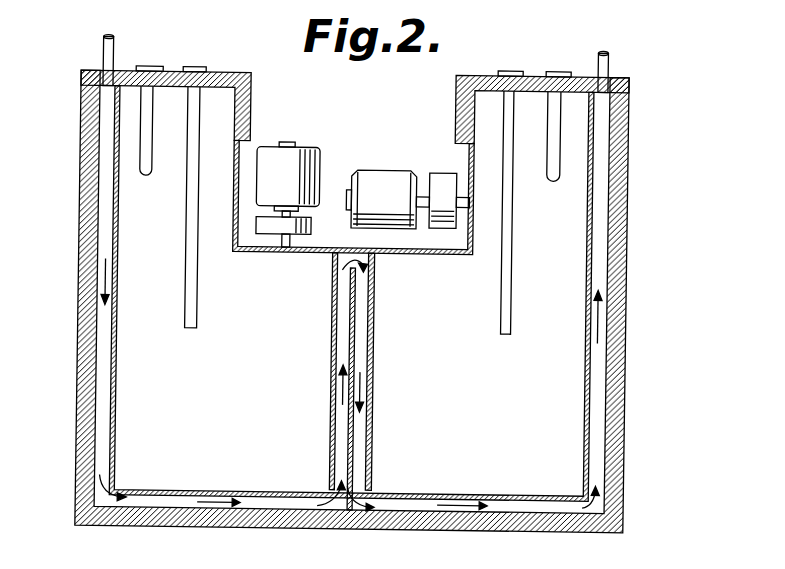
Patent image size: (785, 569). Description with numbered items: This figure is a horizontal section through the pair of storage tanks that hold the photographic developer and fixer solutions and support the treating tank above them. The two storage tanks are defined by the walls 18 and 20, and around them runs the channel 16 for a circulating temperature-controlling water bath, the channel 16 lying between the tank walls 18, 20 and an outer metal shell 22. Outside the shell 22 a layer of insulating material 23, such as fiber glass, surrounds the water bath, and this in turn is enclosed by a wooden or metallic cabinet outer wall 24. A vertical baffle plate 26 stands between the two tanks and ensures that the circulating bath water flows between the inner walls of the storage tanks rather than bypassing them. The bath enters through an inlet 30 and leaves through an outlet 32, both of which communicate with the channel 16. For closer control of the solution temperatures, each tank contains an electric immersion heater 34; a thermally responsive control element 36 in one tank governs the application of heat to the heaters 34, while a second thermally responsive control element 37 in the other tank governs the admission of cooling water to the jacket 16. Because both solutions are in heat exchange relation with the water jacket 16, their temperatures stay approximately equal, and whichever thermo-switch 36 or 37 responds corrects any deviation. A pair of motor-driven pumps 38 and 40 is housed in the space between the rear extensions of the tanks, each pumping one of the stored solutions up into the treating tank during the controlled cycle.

The channel 16 is at (105, 221).
The wall 18 is at (118, 403).
The wall 20 is at (375, 412).
The outer metal shell 22 is at (98, 357).
The layer of insulating material 23 is at (88, 329).
The cabinet outer wall 24 is at (80, 426).
The vertical baffle plate 26 is at (355, 340).
The inlet 30 is at (99, 50).
The outlet 32 is at (606, 58).
The electric immersion heater 34 is at (197, 294).
The thermally responsive control element 36 is at (150, 164).
The second thermally responsive control element 37 is at (551, 178).
The pump 38 is at (311, 228).
The pump 40 is at (442, 172).